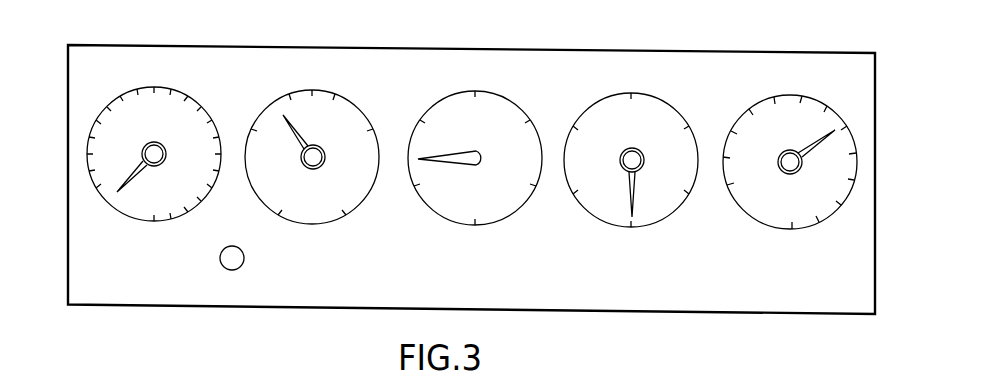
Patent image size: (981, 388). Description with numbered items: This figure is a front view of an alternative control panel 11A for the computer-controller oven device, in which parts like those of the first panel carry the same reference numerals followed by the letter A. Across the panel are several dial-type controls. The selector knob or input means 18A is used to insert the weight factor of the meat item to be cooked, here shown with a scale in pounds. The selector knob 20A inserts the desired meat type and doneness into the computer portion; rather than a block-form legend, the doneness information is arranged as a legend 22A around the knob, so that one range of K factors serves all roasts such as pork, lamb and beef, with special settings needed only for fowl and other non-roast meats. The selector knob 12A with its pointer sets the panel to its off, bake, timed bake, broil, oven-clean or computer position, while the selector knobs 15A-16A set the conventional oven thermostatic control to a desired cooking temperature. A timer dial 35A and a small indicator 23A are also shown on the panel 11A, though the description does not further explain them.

The control panel 11A is at (568, 58).
The selector knob or input means 18A is at (155, 152).
The selector knob 20A is at (308, 157).
The legend 22A is at (345, 96).
The indicator light 23A is at (244, 258).
The timer dial 35A is at (456, 221).
The selector knob 12A is at (622, 158).
The selector knobs 15A-16A is at (790, 165).